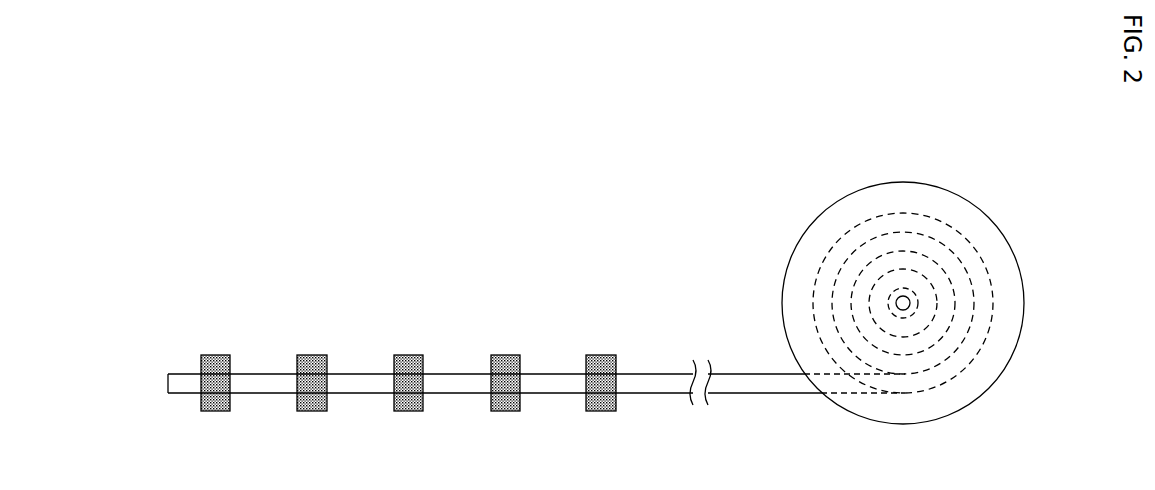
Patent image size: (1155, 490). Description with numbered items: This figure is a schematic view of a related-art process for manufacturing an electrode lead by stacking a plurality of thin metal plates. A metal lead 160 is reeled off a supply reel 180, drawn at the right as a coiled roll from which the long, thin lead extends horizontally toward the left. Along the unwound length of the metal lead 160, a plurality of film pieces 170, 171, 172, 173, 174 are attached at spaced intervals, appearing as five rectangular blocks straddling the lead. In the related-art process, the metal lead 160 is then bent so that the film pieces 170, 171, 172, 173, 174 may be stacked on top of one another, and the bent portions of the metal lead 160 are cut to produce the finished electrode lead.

The metal lead 160 is at (172, 374).
The film piece 170 is at (220, 357).
The film piece 171 is at (313, 357).
The film piece 172 is at (404, 357).
The film piece 173 is at (504, 357).
The film piece 174 is at (602, 357).
The supply reel 180 is at (898, 192).